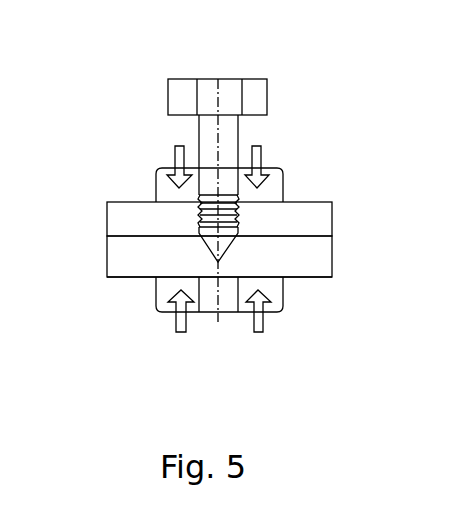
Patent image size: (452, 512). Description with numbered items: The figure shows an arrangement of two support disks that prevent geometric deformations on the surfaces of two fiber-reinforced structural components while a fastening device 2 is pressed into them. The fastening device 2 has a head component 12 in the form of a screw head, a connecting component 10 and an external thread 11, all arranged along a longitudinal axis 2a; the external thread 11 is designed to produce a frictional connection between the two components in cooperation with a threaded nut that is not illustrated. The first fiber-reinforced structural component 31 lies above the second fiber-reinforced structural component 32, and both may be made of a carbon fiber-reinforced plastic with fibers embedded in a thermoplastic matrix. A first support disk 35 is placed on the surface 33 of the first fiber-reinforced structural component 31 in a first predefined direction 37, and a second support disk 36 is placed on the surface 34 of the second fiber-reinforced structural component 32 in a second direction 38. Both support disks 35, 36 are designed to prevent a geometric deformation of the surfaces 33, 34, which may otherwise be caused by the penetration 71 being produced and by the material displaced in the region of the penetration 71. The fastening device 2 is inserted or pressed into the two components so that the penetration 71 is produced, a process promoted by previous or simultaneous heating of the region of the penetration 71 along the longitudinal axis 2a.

The fastening device 2 is at (200, 140).
The longitudinal axis 2a is at (220, 317).
The connecting component 10 is at (227, 140).
The external thread 11 is at (213, 220).
The head component 12 is at (258, 95).
The first fiber-reinforced structural component 31 is at (318, 223).
The second fiber-reinforced structural component 32 is at (320, 262).
The surface of the first fiber-reinforced structural component 33 is at (236, 253).
The surface of the second fiber-reinforced structural component 34 is at (118, 281).
The first support disk 35 is at (283, 183).
The second support disk 36 is at (265, 288).
The first predefined direction 37 is at (180, 160).
The second direction 38 is at (177, 318).
The penetration 71 is at (198, 229).